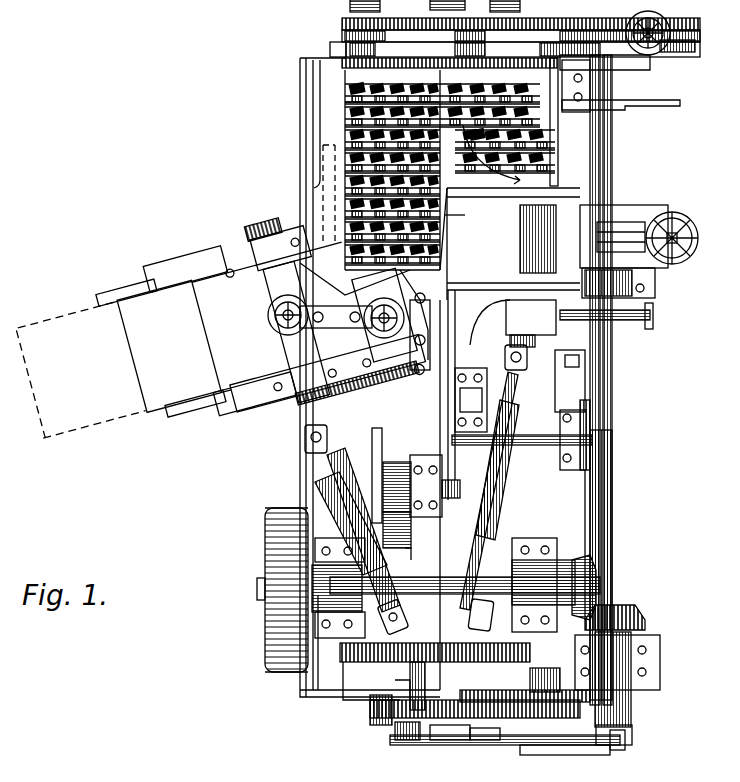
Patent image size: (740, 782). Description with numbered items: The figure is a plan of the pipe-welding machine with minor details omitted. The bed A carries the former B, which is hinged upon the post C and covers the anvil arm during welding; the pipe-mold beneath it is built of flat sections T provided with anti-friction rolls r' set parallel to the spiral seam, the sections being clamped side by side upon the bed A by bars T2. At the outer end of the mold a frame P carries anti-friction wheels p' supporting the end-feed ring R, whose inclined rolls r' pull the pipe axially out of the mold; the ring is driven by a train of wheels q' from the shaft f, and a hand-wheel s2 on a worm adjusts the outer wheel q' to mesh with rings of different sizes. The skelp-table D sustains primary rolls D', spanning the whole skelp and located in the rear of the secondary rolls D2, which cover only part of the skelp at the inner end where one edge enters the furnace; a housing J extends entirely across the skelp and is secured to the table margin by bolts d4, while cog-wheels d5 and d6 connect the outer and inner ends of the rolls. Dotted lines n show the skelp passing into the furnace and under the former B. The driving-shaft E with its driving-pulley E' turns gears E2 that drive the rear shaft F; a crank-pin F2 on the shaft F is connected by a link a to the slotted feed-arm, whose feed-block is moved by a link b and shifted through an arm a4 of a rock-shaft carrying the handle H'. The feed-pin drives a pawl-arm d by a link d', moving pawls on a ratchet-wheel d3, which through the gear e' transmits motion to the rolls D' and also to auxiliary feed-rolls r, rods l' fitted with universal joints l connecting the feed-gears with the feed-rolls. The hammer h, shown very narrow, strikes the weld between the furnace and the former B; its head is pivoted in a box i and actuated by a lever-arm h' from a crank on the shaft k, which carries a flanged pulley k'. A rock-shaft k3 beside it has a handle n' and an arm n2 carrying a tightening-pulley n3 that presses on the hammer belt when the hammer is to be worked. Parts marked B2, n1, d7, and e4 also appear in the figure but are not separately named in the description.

The bed A is at (300, 90).
The former B is at (440, 268).
The plate B2 is at (415, 320).
The post C is at (556, 240).
The skelp-table D is at (192, 338).
The primary rolls D' is at (317, 332).
The secondary rolls D2 is at (384, 315).
The driving-shaft E is at (456, 588).
The driving-pulley E' is at (274, 590).
The gears E2 is at (640, 612).
The rear shaft F is at (620, 425).
The crank-pin F2 is at (630, 732).
The handle H' is at (633, 101).
The housing J is at (280, 248).
The frame P is at (330, 46).
The anti-friction wheels p' is at (505, 27).
The ring R is at (405, 40).
The mold sections T is at (345, 122).
The bars T2 is at (345, 108).
The anti-friction rolls r' is at (445, 107).
The auxiliary feed-rolls r is at (531, 323).
The post f is at (612, 150).
The hammer h is at (461, 215).
The lever-arm h' is at (463, 395).
The box i is at (482, 400).
The shaft k is at (421, 501).
The flanged pulley k' is at (380, 486).
The rock-shaft k3 is at (520, 445).
The universal joints l is at (409, 399).
The rods l' is at (403, 503).
The dotted lines n is at (255, 351).
The handle n' is at (589, 545).
The guide n1 is at (496, 312).
The arm n2 is at (372, 450).
The tightening-pulley n3 is at (412, 548).
The train of wheels q' is at (663, 29).
The hand-wheel s2 is at (672, 44).
The pawl-arm d is at (379, 733).
The link d' is at (410, 750).
The ratchet-wheel d3 is at (470, 740).
The bolts d4 is at (243, 254).
The cog-wheels d5 is at (262, 228).
The cog-wheels d6 is at (366, 363).
The rack d7 is at (345, 395).
The gear e' is at (435, 666).
The gear e4 is at (545, 708).
The link a is at (552, 740).
The arm a4 is at (572, 748).
The link b is at (495, 742).